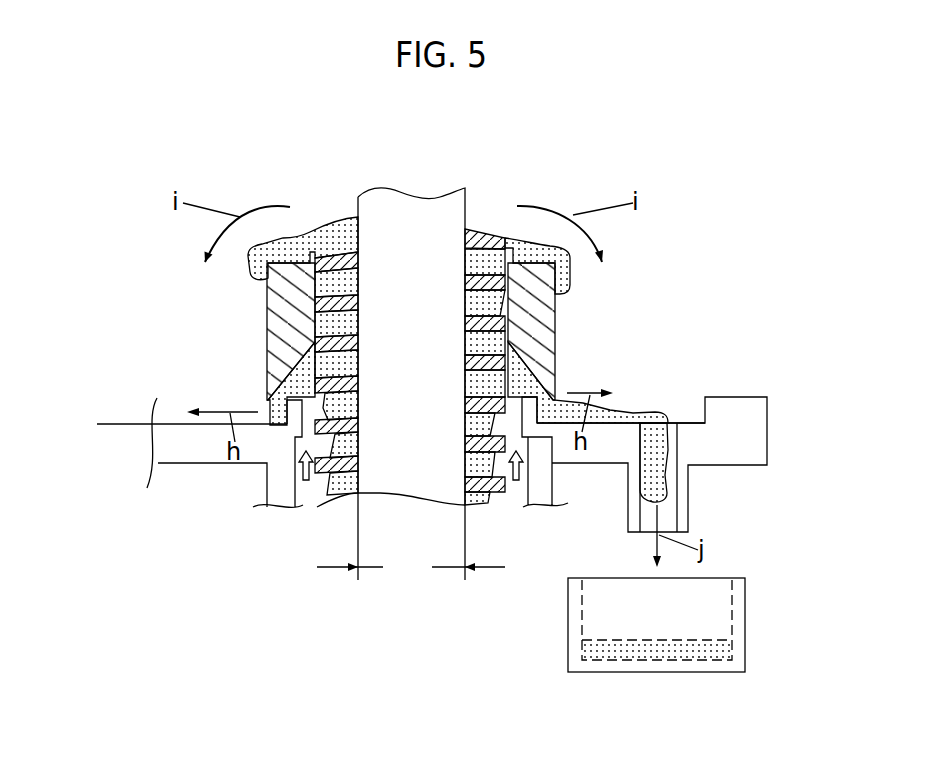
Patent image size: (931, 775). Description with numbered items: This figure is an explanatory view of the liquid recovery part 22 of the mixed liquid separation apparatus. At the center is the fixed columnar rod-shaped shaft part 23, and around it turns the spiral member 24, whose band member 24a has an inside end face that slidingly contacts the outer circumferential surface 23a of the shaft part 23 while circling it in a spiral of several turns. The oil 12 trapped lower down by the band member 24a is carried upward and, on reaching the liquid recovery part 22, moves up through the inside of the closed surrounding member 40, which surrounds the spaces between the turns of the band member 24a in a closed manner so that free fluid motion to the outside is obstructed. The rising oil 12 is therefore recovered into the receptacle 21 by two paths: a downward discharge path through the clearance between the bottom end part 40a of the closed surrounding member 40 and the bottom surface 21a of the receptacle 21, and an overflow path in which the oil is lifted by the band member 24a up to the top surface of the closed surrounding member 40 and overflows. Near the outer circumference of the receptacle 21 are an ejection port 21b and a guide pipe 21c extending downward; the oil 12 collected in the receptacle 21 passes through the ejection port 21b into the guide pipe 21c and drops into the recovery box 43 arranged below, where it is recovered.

The oil 12 is at (338, 495).
The receptacle 21 is at (603, 450).
The bottom surface of the receptacle 21a is at (122, 418).
The ejection port 21b is at (675, 406).
The guide pipe 21c is at (683, 498).
The liquid recovery part 22 is at (533, 198).
The shaft part 23 is at (412, 215).
The outer circumferential surface of the shaft part 23a is at (411, 565).
The spiral member 24 is at (486, 210).
The band member 24a is at (503, 315).
The closed surrounding member 40 is at (277, 310).
The bottom end part of the closed surrounding member 40a is at (270, 397).
The recovery box 43 is at (740, 610).